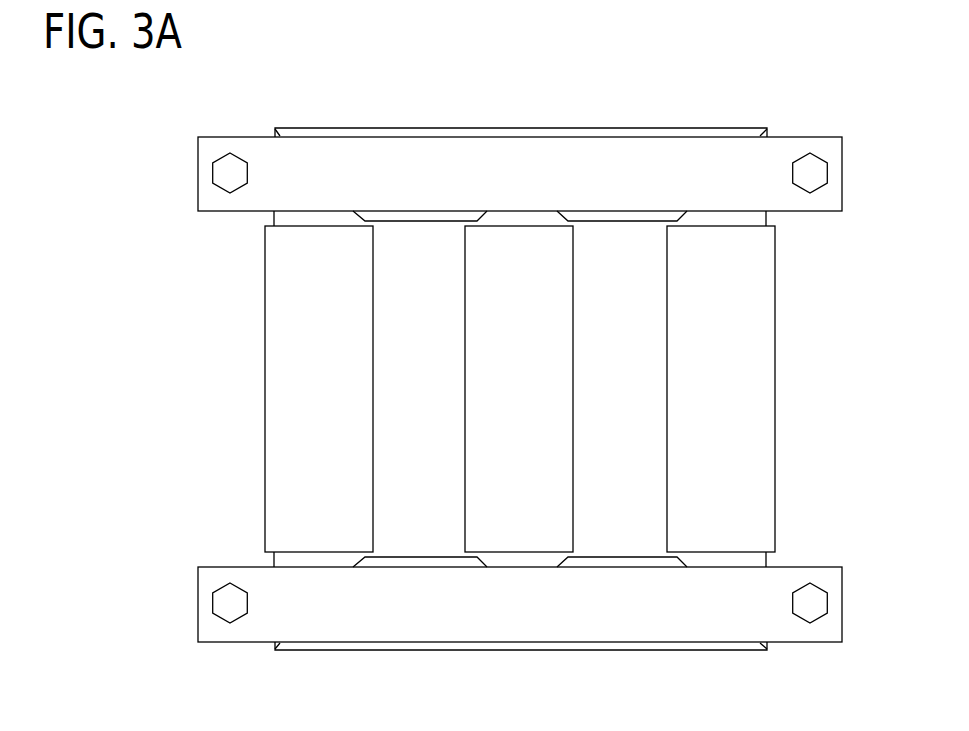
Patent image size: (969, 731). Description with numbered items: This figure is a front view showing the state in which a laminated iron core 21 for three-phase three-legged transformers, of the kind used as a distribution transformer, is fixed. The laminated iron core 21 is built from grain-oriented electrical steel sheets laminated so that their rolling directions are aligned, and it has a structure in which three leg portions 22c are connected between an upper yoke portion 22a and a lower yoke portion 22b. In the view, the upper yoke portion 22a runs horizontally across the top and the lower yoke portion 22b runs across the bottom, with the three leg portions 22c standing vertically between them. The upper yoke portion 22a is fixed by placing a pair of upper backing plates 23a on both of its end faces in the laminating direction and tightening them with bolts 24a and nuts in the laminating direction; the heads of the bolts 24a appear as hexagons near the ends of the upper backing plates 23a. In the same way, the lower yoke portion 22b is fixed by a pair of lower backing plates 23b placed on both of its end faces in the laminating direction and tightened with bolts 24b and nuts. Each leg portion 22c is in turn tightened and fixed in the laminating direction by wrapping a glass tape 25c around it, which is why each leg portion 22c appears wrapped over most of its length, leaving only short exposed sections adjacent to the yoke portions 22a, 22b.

The laminated iron core 21 is at (722, 102).
The upper yoke portion 22a is at (572, 128).
The lower yoke portion 22b is at (573, 643).
The leg portions 22c is at (288, 562).
The upper backing plates 23a is at (427, 160).
The lower backing plates 23b is at (427, 615).
The bolts 24a is at (231, 173).
The bolts 24b is at (230, 603).
The glass tape 25c is at (295, 395).